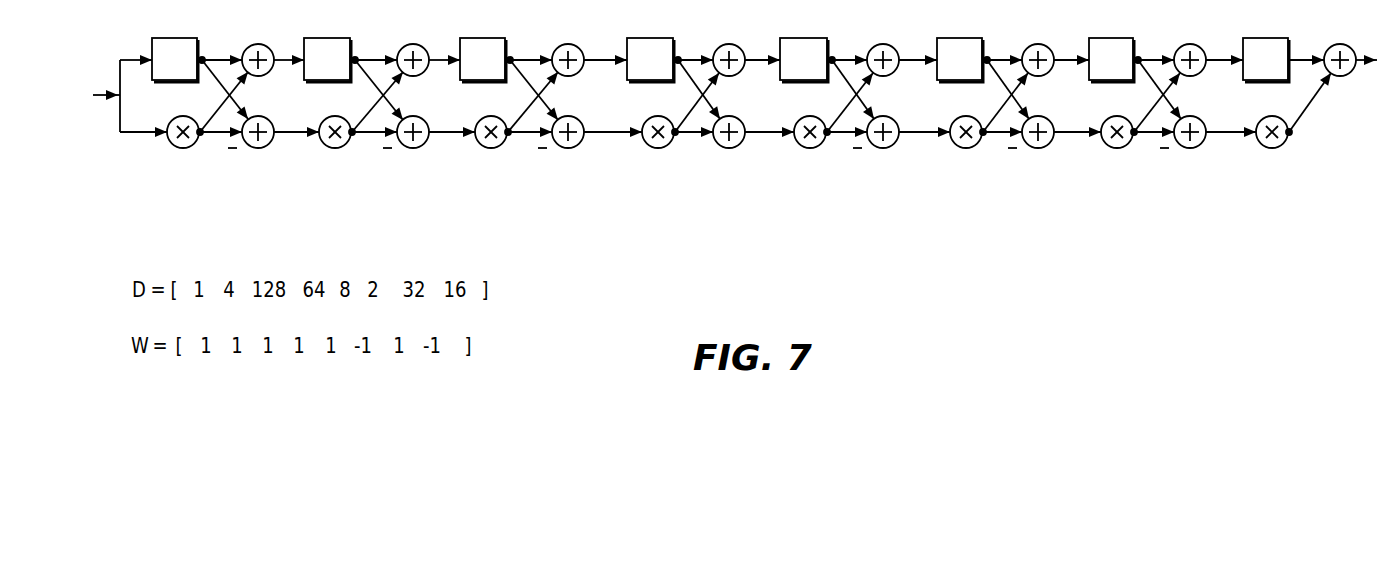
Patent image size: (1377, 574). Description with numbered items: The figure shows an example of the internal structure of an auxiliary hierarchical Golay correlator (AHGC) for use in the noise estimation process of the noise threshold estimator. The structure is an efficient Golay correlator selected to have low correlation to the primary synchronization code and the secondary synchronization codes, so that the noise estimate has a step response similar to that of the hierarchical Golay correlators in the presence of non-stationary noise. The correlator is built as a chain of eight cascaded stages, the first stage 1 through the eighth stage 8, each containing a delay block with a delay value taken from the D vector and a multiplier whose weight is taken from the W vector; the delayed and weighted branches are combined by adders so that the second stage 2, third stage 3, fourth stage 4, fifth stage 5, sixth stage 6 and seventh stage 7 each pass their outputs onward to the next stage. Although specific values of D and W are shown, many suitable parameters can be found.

The delay stage D1 with multiplier W1 1 is at (183, 149).
The delay stage D2 with multiplier W2 2 is at (335, 149).
The delay stage D3 with multiplier W3 3 is at (491, 149).
The delay stage D4 with multiplier W4 4 is at (658, 149).
The delay stage D5 with multiplier W5 5 is at (810, 149).
The delay stage D6 with multiplier W6 6 is at (966, 149).
The delay stage D7 with multiplier W7 7 is at (1117, 149).
The delay stage D8 with multiplier W8 8 is at (1272, 149).